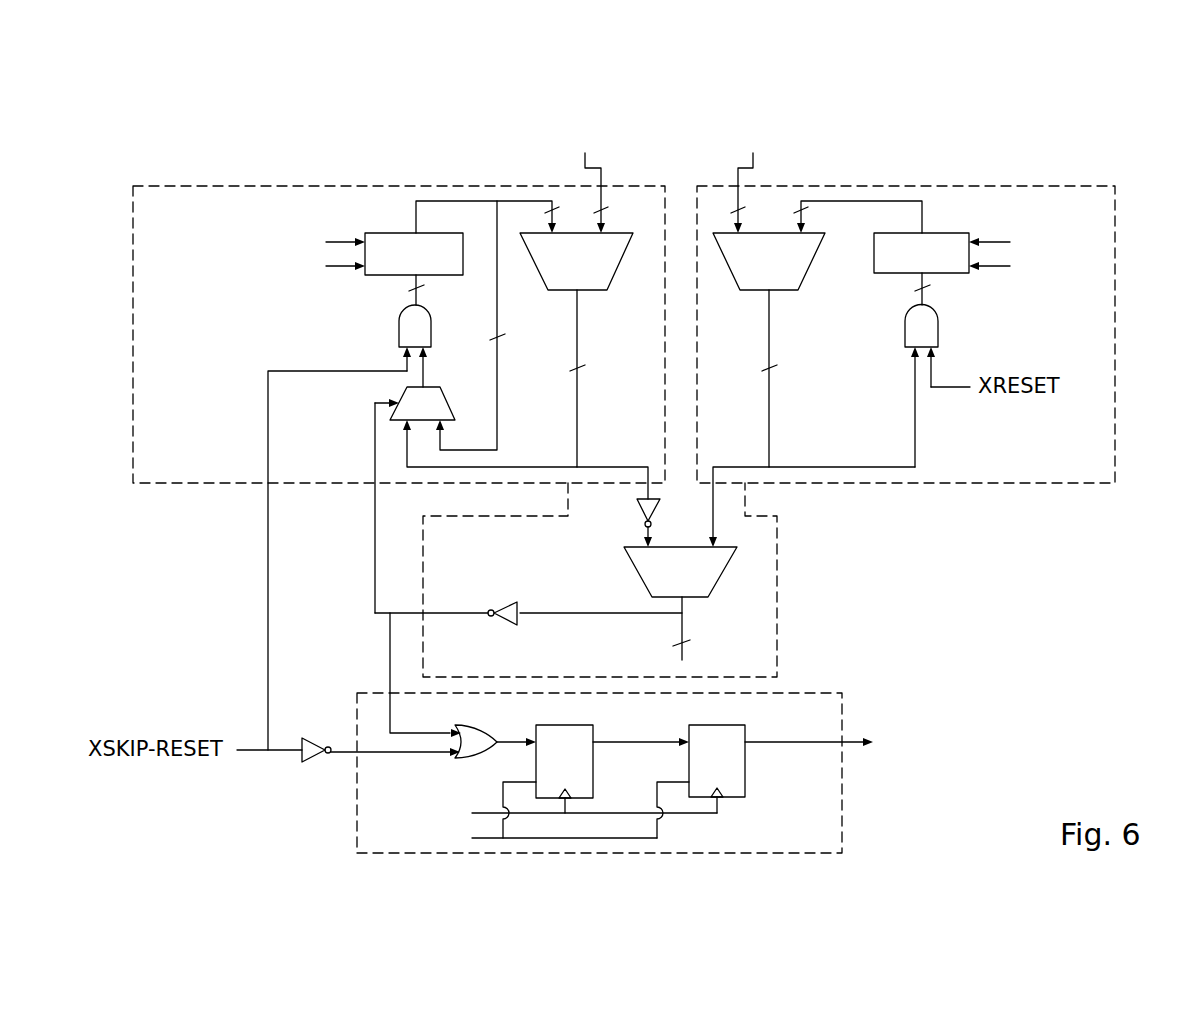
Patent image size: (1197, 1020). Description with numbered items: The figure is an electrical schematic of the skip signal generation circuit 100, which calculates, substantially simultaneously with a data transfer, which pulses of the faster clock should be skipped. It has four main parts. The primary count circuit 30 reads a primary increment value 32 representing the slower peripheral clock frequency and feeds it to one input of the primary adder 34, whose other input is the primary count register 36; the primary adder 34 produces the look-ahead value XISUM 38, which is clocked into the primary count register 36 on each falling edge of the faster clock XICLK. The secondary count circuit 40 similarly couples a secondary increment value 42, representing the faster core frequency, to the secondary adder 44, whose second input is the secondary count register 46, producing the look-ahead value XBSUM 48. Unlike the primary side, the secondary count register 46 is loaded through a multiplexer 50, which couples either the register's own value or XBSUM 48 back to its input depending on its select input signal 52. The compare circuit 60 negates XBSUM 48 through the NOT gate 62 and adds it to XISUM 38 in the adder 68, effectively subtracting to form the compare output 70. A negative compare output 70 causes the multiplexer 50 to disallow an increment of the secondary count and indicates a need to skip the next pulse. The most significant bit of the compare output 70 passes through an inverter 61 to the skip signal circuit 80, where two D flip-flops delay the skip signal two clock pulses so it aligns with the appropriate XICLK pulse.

The skip signal generation circuit 100 is at (288, 75).
The secondary count circuit 40 is at (327, 186).
The primary count circuit 30 is at (970, 185).
The secondary increment value 42 is at (585, 141).
The primary increment value 32 is at (753, 141).
The secondary count register 46 is at (433, 276).
The secondary adder 44 is at (576, 261).
The XBSUM 48 is at (529, 394).
The multiplexer 50 is at (430, 387).
The select input signal 52 is at (373, 450).
The primary adder 34 is at (769, 261).
The primary count register 36 is at (945, 276).
The XISUM 38 is at (812, 418).
The compare circuit 60 is at (778, 563).
The NOT gate 62 is at (640, 508).
The adder 68 is at (680, 572).
The compare output 70 is at (684, 622).
The MSB inverter 61 is at (507, 600).
The skip signal circuit 80 is at (843, 817).